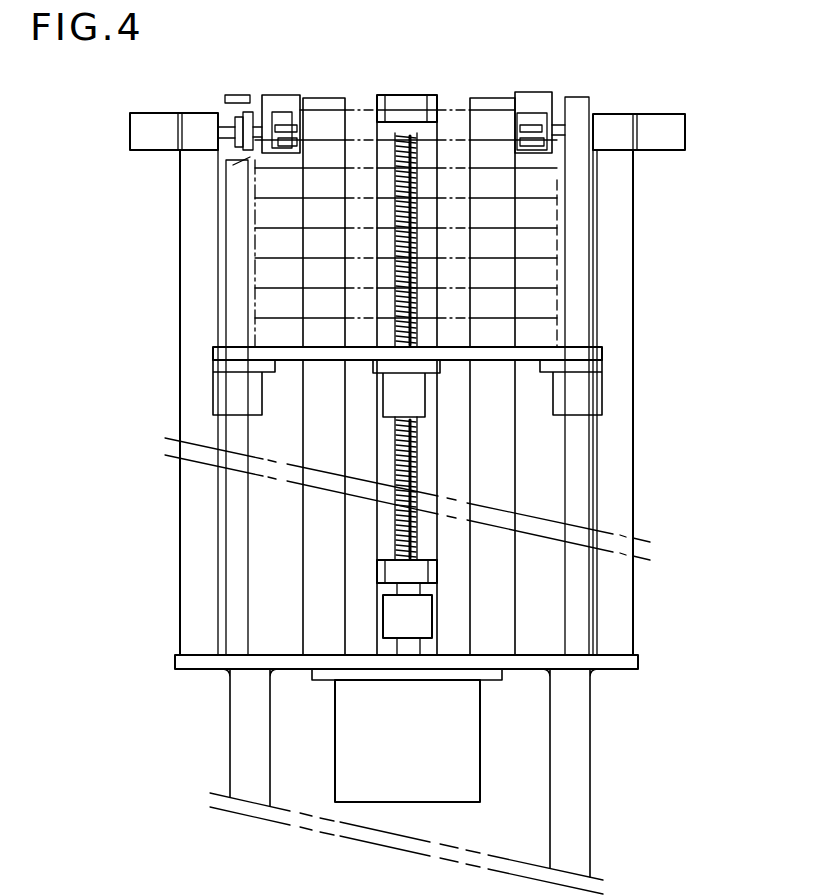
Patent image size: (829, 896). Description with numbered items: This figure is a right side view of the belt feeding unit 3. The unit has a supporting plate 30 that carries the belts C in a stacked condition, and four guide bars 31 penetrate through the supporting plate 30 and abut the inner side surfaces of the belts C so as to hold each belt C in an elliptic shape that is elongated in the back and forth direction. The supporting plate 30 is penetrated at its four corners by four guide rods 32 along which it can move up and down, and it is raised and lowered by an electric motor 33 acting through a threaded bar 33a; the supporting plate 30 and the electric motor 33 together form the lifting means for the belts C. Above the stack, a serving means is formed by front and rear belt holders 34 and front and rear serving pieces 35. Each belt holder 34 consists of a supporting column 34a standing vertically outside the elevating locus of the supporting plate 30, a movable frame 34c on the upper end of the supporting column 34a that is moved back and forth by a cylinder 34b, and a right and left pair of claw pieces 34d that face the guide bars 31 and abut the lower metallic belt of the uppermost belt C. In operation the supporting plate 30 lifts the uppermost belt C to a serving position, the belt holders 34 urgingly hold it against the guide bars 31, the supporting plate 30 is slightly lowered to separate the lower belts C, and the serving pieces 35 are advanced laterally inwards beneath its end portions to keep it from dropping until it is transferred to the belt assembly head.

The belt feeding unit 3 is at (176, 271).
The supporting plate 30 is at (593, 355).
The guide bars 31 is at (313, 552).
The guide rods 32 is at (237, 618).
The electric motor 33 is at (463, 758).
The threaded bar 33a is at (245, 455).
The belt holders 34 is at (236, 107).
The supporting column 34a is at (190, 329).
The cylinder 34b is at (137, 138).
The movable frame 34c is at (262, 118).
The claw pieces 34d is at (280, 132).
The serving pieces 35 is at (287, 147).
The belts C is at (547, 243).